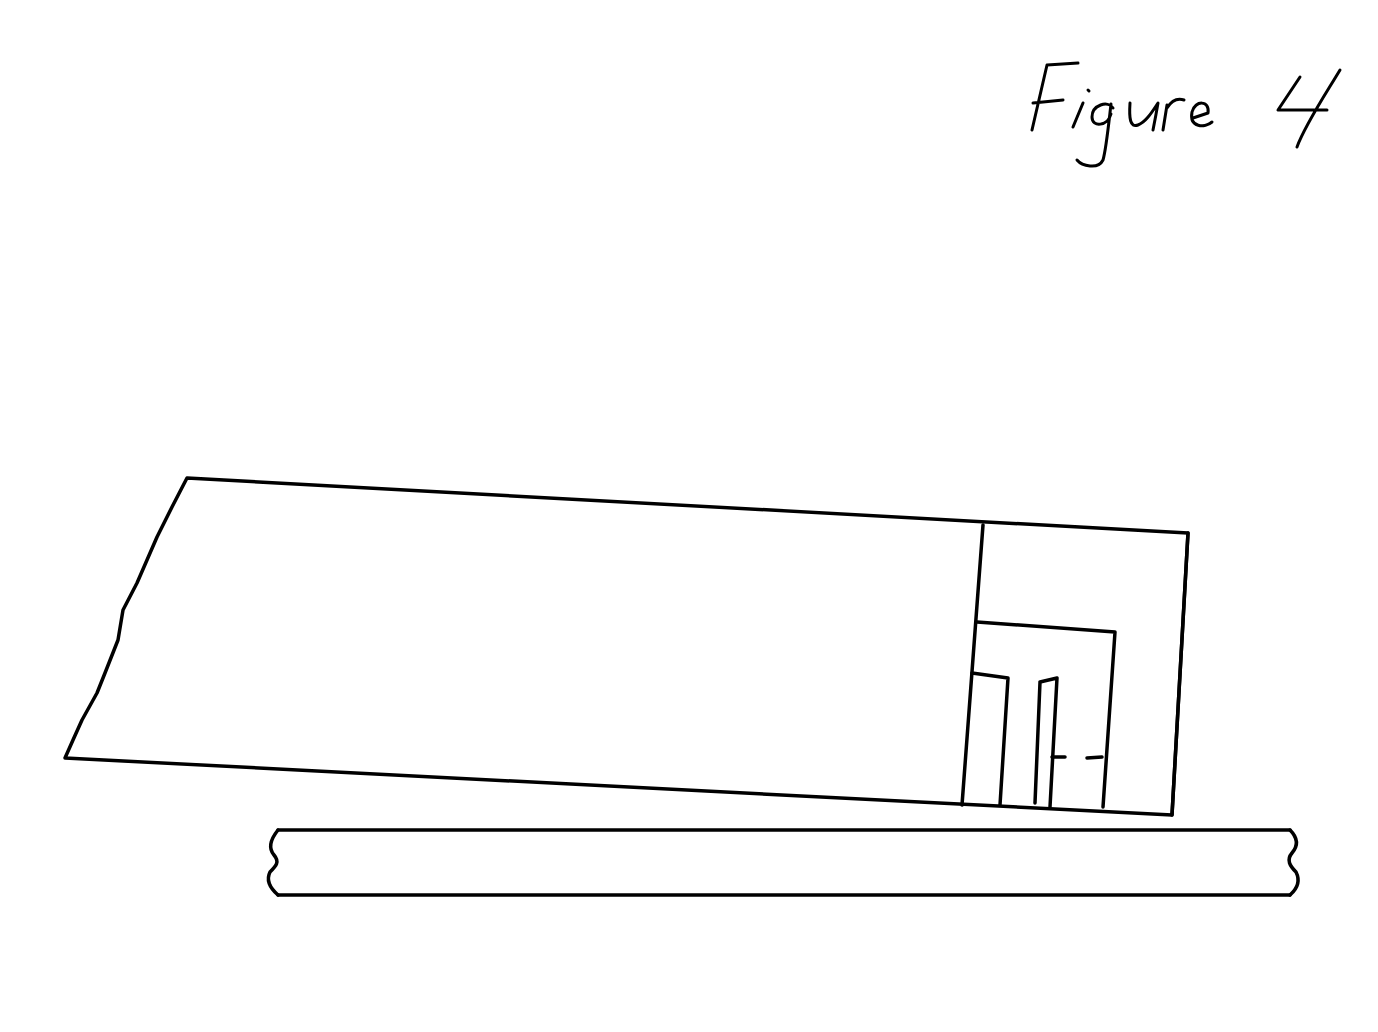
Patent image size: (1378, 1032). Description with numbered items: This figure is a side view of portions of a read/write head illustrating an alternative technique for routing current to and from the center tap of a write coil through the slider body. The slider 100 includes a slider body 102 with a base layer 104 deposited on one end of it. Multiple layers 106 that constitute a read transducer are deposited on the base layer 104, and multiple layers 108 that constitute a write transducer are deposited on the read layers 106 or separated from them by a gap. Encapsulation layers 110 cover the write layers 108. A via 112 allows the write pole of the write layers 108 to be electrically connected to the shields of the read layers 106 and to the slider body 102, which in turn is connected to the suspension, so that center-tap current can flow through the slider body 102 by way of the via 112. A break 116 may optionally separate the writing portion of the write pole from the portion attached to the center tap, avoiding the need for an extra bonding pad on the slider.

The slider 100 is at (722, 447).
The slider body 102 is at (397, 547).
The base layer 104 is at (1000, 560).
The read layers 106 is at (1024, 728).
The write layers 108 is at (1089, 708).
The encapsulation layers 110 is at (1150, 570).
The via 112 is at (993, 650).
The break 116 is at (1099, 745).